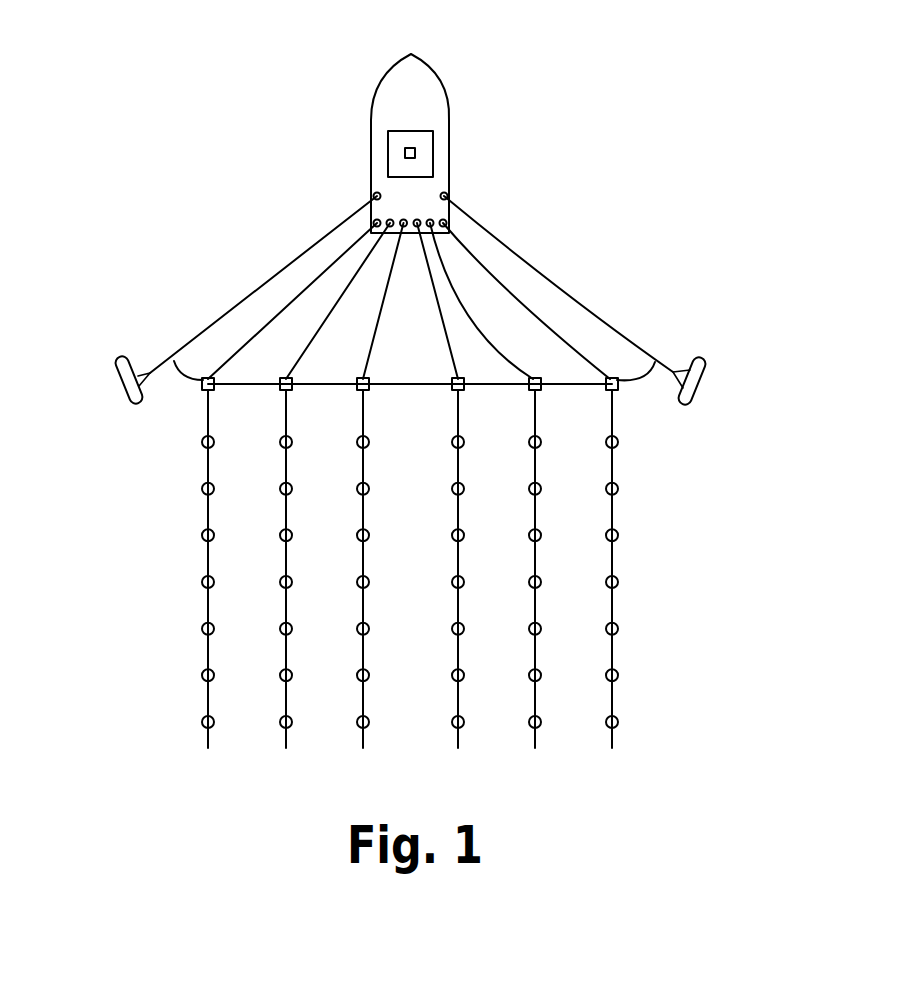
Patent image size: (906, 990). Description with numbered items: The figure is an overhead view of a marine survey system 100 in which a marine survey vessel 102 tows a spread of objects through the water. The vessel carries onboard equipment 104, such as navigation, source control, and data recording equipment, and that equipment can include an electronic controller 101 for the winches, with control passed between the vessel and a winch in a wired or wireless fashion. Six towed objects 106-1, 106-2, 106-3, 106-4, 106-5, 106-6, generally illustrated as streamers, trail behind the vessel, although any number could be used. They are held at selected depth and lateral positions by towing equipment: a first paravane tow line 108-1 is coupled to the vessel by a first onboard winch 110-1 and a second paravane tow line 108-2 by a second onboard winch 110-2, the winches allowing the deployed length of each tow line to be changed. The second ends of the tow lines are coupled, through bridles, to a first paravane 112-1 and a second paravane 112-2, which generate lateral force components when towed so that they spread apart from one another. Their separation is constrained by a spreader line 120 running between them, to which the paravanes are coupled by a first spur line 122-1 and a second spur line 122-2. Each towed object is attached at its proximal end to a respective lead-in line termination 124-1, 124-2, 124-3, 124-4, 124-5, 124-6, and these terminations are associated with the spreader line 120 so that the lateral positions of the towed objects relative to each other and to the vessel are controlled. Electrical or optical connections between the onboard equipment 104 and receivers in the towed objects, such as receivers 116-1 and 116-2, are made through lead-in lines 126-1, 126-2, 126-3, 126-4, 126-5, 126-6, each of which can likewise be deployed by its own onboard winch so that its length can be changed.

The marine survey system 100 is at (222, 83).
The electronic controller 101 is at (410, 147).
The marine survey vessel 102 is at (442, 88).
The onboard equipment 104 is at (434, 142).
The towed object 106-1 is at (172, 585).
The towed object 106-2 is at (285, 749).
The towed object 106-3 is at (362, 749).
The towed object 106-4 is at (457, 749).
The towed object 106-5 is at (534, 749).
The towed object 106-6 is at (611, 749).
The first paravane tow line 108-1 is at (354, 216).
The second paravane tow line 108-2 is at (464, 214).
The first onboard winch 110-1 is at (374, 195).
The second onboard winch 110-2 is at (447, 195).
The first paravane 112-1 is at (121, 372).
The second paravane 112-2 is at (707, 369).
The receiver 116-1 is at (201, 445).
The receiver 116-2 is at (201, 491).
The spreader line 120 is at (409, 383).
The first spur line 122-1 is at (186, 394).
The second spur line 122-2 is at (633, 394).
The lead-in line termination 124-1 is at (212, 392).
The lead-in line termination 124-2 is at (290, 392).
The lead-in line termination 124-3 is at (367, 392).
The lead-in line termination 124-4 is at (462, 392).
The lead-in line termination 124-5 is at (538, 392).
The lead-in line termination 124-6 is at (620, 392).
The lead-in line 126-1 is at (352, 248).
The lead-in line 126-2 is at (358, 282).
The lead-in line 126-3 is at (381, 320).
The lead-in line 126-4 is at (442, 322).
The lead-in line 126-5 is at (463, 283).
The lead-in line 126-6 is at (470, 248).